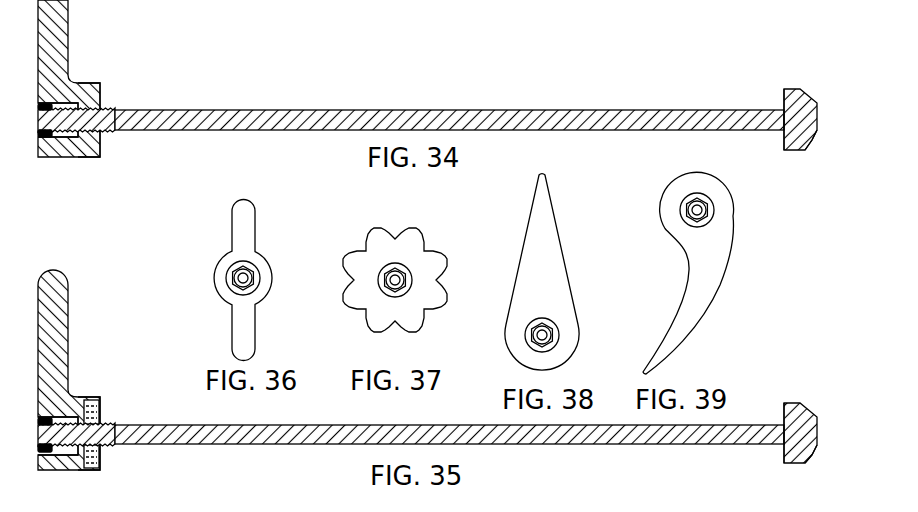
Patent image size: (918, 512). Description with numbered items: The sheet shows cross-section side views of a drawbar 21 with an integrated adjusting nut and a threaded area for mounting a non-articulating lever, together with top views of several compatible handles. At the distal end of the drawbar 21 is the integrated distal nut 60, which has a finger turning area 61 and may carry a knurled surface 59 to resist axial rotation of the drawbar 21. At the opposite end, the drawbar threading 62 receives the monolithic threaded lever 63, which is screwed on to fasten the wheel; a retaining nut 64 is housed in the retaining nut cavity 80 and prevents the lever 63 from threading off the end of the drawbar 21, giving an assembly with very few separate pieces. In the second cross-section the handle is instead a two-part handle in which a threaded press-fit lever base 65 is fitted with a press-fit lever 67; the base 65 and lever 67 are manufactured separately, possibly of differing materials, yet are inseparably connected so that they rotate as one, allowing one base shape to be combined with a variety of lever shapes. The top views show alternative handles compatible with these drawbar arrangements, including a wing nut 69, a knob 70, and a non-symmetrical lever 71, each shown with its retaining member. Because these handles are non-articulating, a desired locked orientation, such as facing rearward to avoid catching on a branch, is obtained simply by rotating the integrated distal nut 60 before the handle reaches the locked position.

In FIG. 34, the drawbar 21 is at (320, 125).
In FIG. 35, the drawbar 21 is at (272, 445).
In FIG. 36, the drawbar 21 is at (240, 278).
In FIG. 37, the drawbar 21 is at (392, 285).
In FIG. 38, the drawbar 21 is at (545, 340).
In FIG. 39, the drawbar 21 is at (705, 205).
In FIG. 34, the knurled surface 59 is at (783, 102).
In FIG. 35, the knurled surface 59 is at (783, 417).
In FIG. 34, the integrated distal nut 60 is at (790, 92).
In FIG. 35, the integrated distal nut 60 is at (790, 406).
In FIG. 34, the finger turning area 61 is at (811, 137).
In FIG. 35, the finger turning area 61 is at (811, 452).
In FIG. 34, the drawbar threading 62 is at (103, 106).
In FIG. 35, the drawbar threading 62 is at (103, 423).
In FIG. 34, the monolithic threaded lever 63 is at (58, 50).
In FIG. 34, the retaining nut 64 is at (45, 140).
In FIG. 35, the retaining nut 64 is at (45, 455).
In FIG. 36, the retaining nut 64 is at (255, 290).
In FIG. 37, the retaining nut 64 is at (413, 272).
In FIG. 38, the retaining nut 64 is at (555, 336).
In FIG. 39, the retaining nut 64 is at (685, 205).
In FIG. 35, the threaded press-fit lever base 65 is at (91, 400).
In FIG. 35, the press-fit lever 67 is at (55, 327).
In FIG. 38, the press-fit lever 67 is at (536, 255).
In FIG. 36, the wing nut 69 is at (243, 250).
In FIG. 37, the knob 70 is at (368, 265).
In FIG. 39, the non-symmetrical lever 71 is at (705, 268).
In FIG. 34, the retaining nut cavity 80 is at (68, 136).
In FIG. 35, the retaining nut cavity 80 is at (70, 450).